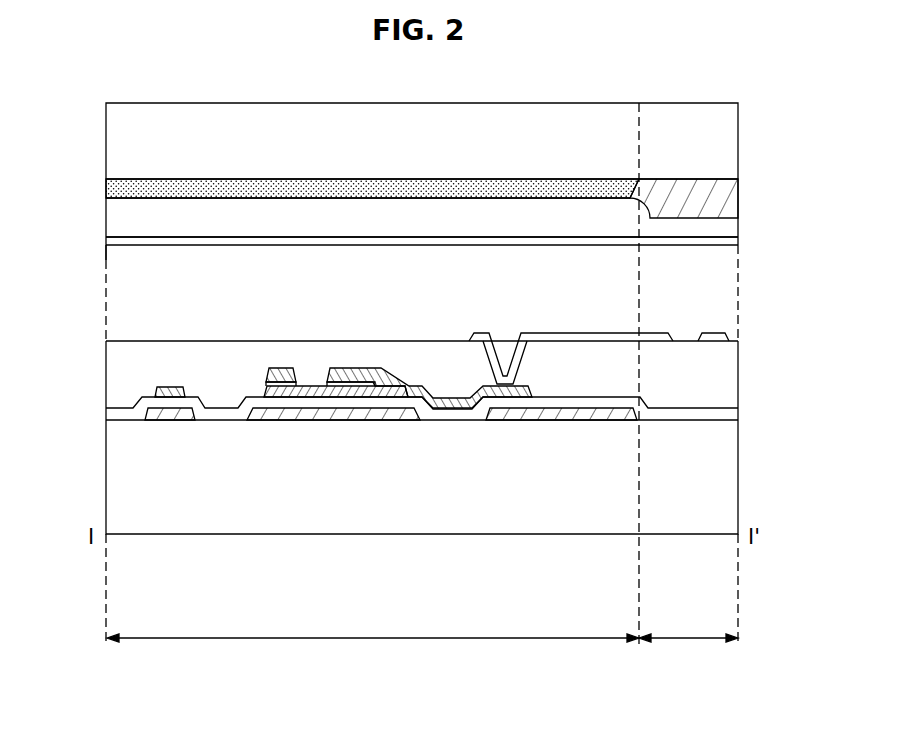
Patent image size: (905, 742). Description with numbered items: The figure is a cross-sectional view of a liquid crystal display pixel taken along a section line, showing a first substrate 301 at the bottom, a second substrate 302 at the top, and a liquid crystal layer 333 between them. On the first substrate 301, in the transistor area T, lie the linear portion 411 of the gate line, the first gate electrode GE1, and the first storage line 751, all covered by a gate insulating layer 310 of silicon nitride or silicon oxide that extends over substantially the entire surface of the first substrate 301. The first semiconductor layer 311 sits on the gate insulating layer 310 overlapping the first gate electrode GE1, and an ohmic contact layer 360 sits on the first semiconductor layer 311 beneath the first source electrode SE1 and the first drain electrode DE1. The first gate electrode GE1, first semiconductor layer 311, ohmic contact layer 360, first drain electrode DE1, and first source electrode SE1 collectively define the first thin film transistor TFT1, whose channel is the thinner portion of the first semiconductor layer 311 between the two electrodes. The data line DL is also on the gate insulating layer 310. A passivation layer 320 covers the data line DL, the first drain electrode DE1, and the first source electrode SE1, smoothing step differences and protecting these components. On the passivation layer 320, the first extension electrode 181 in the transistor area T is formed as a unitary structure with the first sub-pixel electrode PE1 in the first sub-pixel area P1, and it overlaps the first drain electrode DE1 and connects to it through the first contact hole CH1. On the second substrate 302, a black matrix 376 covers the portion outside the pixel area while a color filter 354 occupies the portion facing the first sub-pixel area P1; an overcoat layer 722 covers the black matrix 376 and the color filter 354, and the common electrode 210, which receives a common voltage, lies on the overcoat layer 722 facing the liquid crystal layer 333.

The second substrate 302 is at (718, 142).
The black matrix 376 is at (126, 188).
The color filter 354 is at (718, 199).
The overcoat layer 722 is at (126, 219).
The common electrode 210 is at (655, 243).
The liquid crystal layer 333 is at (718, 296).
The passivation layer 320 is at (718, 374).
The first contact hole CH1 is at (511, 347).
The first extension electrode 181 is at (567, 334).
The first sub-pixel electrode PE1 is at (717, 333).
The gate insulating layer 310 is at (718, 415).
The first substrate 301 is at (718, 474).
The linear portion 411 is at (168, 418).
The data line DL is at (166, 387).
The first storage line 751 is at (566, 413).
The first thin film transistor TFT1 is at (365, 491).
The first gate electrode GE1 is at (290, 417).
The first semiconductor layer 311 is at (312, 395).
The ohmic contact layer 360 is at (350, 383).
The first source electrode SE1 is at (288, 371).
The first drain electrode DE1 is at (362, 368).
The transistor area T is at (373, 652).
The first sub-pixel area P1 is at (688, 652).